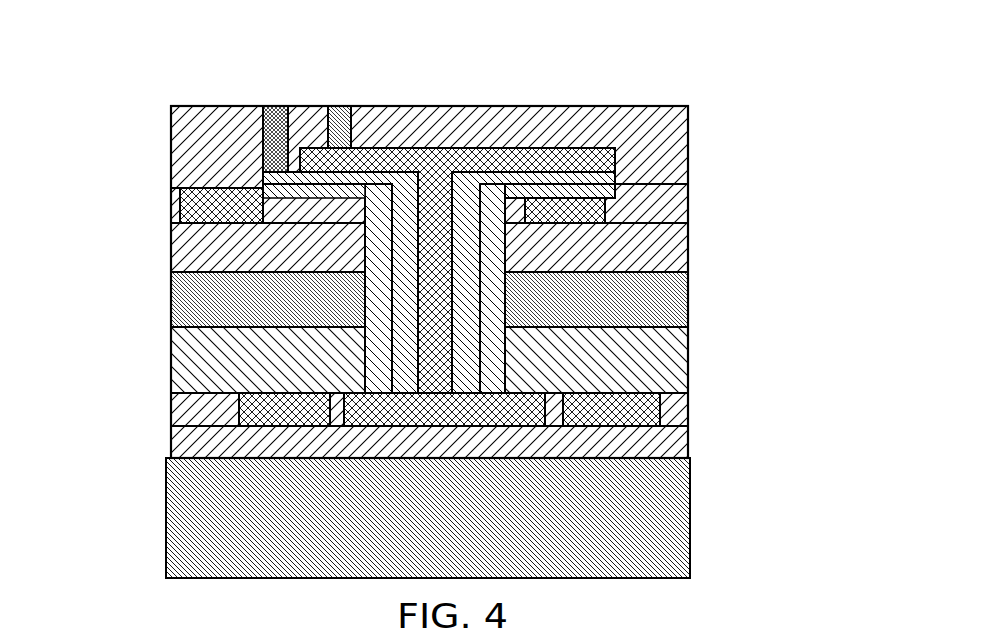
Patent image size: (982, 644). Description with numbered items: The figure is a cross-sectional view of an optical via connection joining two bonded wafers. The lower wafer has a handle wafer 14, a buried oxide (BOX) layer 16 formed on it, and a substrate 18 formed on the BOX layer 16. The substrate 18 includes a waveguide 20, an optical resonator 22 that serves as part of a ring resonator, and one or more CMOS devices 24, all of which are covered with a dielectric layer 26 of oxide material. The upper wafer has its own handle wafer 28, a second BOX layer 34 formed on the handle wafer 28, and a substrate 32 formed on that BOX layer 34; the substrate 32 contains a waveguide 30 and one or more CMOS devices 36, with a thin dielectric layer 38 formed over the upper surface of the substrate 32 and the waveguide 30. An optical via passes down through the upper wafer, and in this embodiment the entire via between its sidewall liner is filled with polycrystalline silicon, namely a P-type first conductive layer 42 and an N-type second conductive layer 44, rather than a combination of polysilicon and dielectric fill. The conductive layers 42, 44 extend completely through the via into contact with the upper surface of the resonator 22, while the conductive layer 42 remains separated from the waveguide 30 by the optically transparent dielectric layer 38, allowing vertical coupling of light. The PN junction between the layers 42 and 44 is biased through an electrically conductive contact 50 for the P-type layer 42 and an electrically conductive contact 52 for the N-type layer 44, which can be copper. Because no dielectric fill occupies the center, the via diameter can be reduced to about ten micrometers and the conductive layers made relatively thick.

The handle wafer 14 is at (688, 505).
The buried oxide (BOX) layer 16 is at (688, 440).
The substrate 18 is at (690, 397).
The waveguide 20 is at (252, 414).
The optical resonator 22 is at (497, 418).
The CMOS devices 24 is at (658, 415).
The dielectric layer 26 is at (667, 350).
The handle wafer 28 is at (658, 310).
The waveguide 30 is at (678, 184).
The substrate 32 is at (673, 222).
The BOX layer 34 is at (690, 237).
The CMOS devices 36 is at (190, 203).
The dielectric layer 38 is at (607, 208).
The first conductive layer 42 is at (617, 152).
The second conductive layer 44 is at (600, 148).
The electrically conductive contact 50 is at (287, 106).
The electrically conductive contact 52 is at (338, 106).